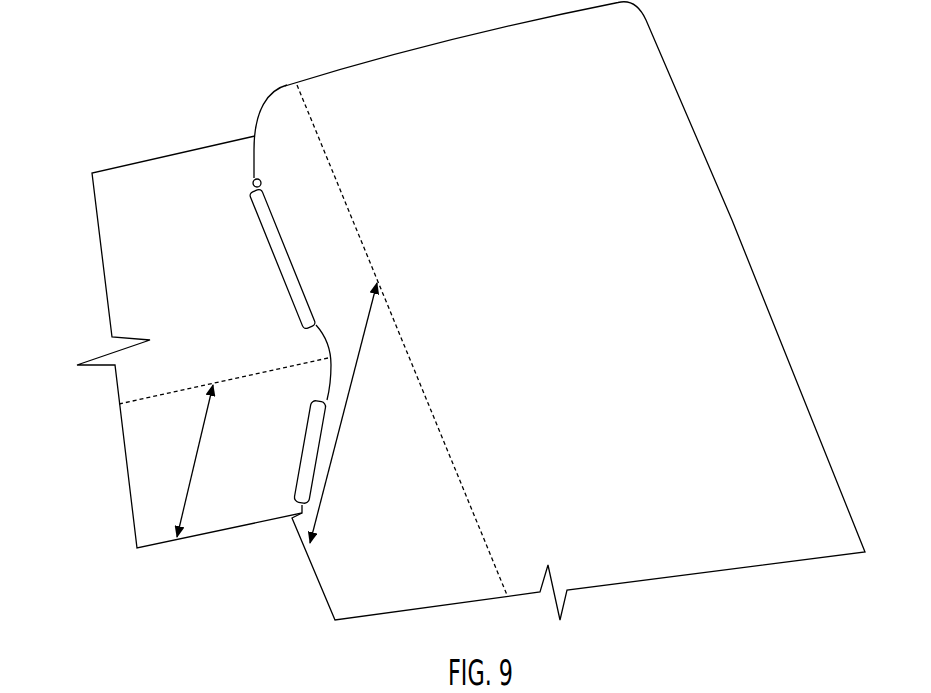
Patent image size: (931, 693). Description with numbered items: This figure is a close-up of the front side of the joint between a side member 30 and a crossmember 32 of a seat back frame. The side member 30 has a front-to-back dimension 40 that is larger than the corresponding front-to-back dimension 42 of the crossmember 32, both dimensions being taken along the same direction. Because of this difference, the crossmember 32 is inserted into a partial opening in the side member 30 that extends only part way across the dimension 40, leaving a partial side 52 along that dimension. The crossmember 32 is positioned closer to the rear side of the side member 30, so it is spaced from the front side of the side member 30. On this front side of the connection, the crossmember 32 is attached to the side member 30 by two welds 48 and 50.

The side member 30 is at (673, 208).
The crossmember 32 is at (120, 278).
The dimension 40 is at (328, 485).
The dimension 42 is at (195, 462).
The weld 48 is at (307, 452).
The weld 50 is at (253, 196).
The partial side 52 is at (292, 170).